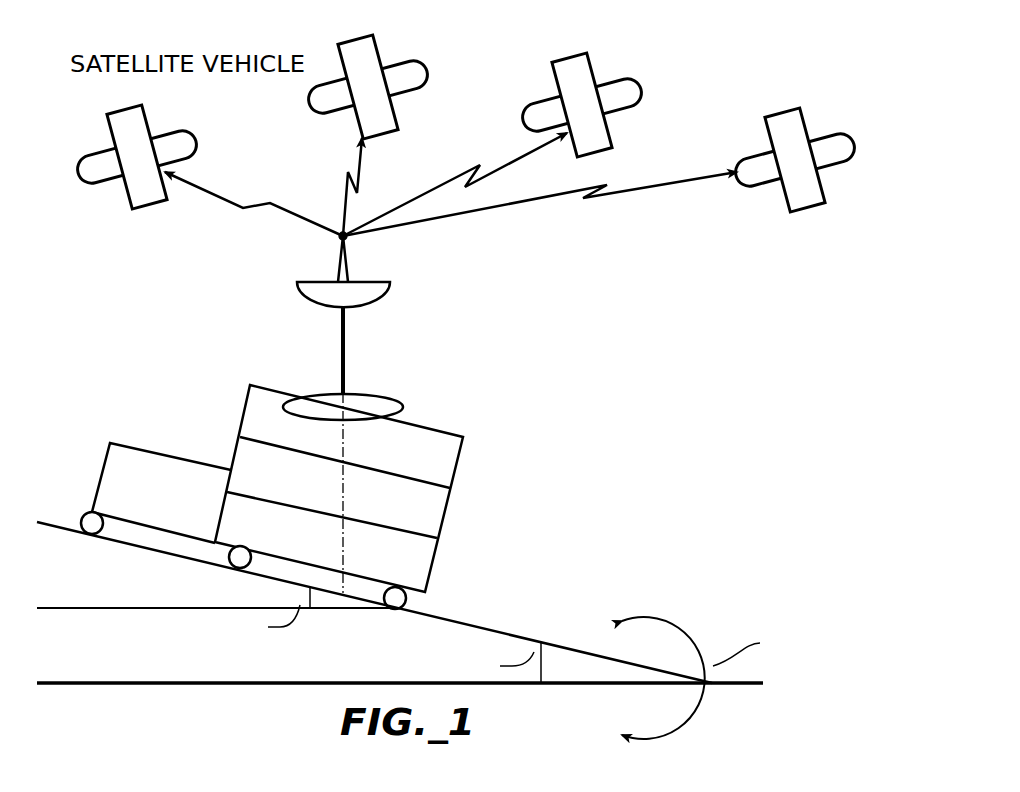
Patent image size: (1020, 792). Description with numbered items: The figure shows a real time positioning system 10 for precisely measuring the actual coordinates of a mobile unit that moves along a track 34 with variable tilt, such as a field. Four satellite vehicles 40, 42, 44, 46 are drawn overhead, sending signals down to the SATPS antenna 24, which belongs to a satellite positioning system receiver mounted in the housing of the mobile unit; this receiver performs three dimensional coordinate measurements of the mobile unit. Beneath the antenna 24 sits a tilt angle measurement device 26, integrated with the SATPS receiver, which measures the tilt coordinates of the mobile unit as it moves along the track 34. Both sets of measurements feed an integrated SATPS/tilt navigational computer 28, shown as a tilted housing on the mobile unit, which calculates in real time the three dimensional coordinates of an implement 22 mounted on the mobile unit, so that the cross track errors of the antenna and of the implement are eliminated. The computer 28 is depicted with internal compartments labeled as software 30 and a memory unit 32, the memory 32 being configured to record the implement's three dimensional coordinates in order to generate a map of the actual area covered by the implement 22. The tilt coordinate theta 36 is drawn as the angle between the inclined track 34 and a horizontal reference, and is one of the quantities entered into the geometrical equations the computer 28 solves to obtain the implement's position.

The positioning system 10 is at (699, 44).
The implement 22 is at (80, 518).
The SATPS antenna 24 is at (372, 288).
The tilt angle measurement device 26 is at (375, 402).
The integrated SATPS/tilt navigational computer 28 is at (436, 435).
The software 30 is at (433, 508).
The memory unit 32 is at (420, 571).
The track with variable tilt 34 is at (511, 634).
The tilt coordinate theta 36 is at (586, 685).
The satellite vehicle SV1 40 is at (152, 125).
The satellite vehicle SV2 42 is at (400, 118).
The satellite vehicle SV3 44 is at (612, 132).
The satellite vehicle SV4 46 is at (808, 125).